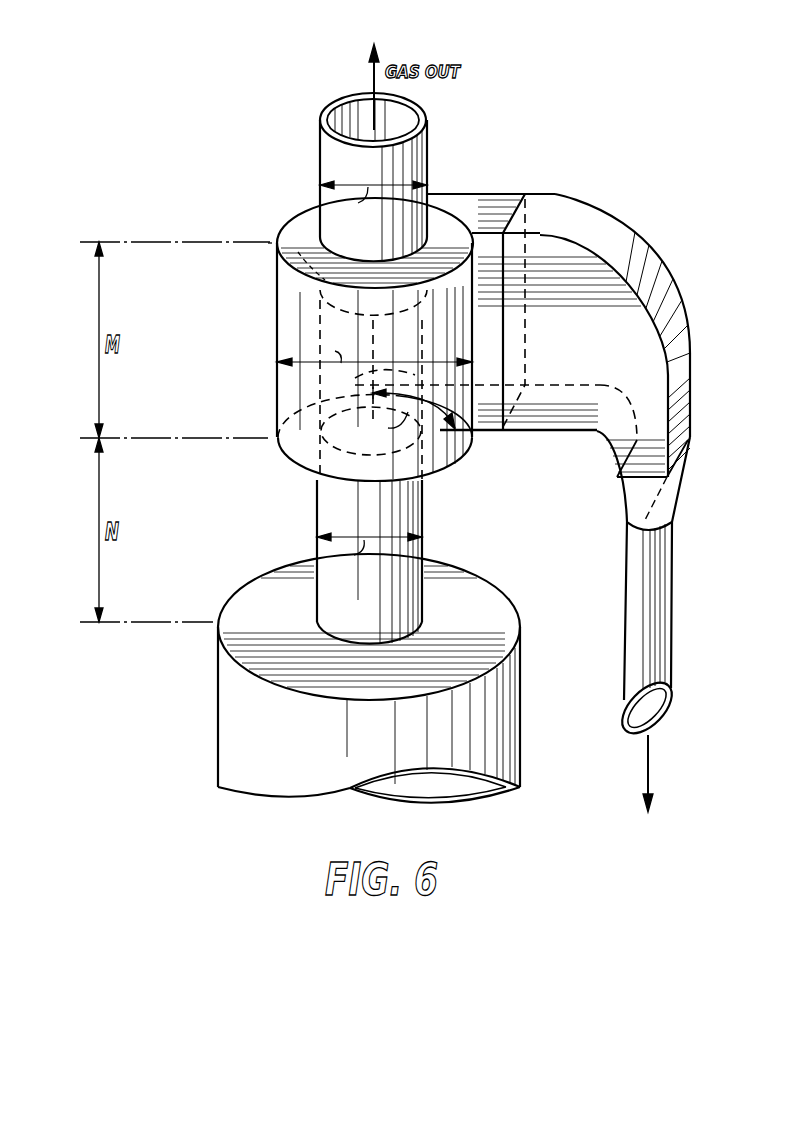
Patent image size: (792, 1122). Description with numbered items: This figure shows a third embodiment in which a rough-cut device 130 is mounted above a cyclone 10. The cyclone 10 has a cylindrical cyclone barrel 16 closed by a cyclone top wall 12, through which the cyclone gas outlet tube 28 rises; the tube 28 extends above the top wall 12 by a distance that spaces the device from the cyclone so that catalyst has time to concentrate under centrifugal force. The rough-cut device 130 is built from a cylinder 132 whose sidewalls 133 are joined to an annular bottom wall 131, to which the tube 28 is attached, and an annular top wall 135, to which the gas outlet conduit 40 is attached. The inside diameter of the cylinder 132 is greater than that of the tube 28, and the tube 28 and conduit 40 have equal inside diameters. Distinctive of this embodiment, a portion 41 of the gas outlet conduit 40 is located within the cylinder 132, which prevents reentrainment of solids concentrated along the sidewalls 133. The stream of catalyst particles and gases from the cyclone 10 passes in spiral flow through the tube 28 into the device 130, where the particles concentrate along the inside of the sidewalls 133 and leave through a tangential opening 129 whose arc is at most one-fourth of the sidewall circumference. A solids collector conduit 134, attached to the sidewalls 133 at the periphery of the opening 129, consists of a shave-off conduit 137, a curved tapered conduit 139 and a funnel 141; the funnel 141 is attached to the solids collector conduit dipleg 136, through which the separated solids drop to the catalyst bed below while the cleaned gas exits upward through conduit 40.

The cyclone 10 is at (227, 566).
The cyclone top wall 12 is at (470, 605).
The cyclone barrel 16 is at (240, 687).
The cyclone gas outlet tube 28 is at (320, 505).
The gas outlet conduit 40 is at (330, 163).
The portion of the gas outlet conduit 41 is at (275, 236).
The tangential opening 129 is at (366, 376).
The rough-cut device 130 is at (240, 298).
The annular bottom wall 131 is at (275, 431).
The cylinder 132 is at (276, 262).
The sidewalls 133 is at (276, 333).
The solids collector conduit 134 is at (657, 275).
The annular top wall 135 is at (297, 225).
The solids collector conduit dipleg 136 is at (645, 638).
The shave-off conduit 137 is at (487, 205).
The tapered conduit 139 is at (573, 225).
The funnel 141 is at (675, 498).